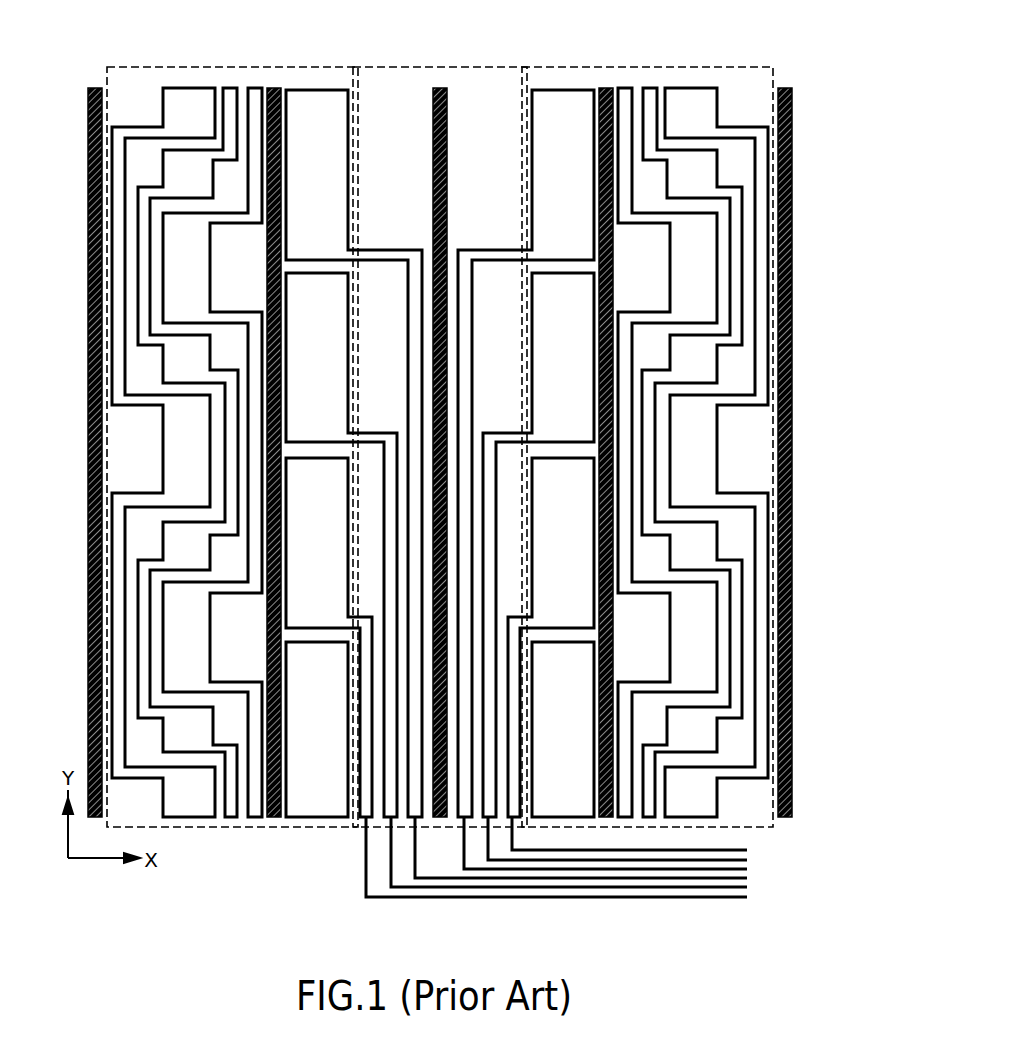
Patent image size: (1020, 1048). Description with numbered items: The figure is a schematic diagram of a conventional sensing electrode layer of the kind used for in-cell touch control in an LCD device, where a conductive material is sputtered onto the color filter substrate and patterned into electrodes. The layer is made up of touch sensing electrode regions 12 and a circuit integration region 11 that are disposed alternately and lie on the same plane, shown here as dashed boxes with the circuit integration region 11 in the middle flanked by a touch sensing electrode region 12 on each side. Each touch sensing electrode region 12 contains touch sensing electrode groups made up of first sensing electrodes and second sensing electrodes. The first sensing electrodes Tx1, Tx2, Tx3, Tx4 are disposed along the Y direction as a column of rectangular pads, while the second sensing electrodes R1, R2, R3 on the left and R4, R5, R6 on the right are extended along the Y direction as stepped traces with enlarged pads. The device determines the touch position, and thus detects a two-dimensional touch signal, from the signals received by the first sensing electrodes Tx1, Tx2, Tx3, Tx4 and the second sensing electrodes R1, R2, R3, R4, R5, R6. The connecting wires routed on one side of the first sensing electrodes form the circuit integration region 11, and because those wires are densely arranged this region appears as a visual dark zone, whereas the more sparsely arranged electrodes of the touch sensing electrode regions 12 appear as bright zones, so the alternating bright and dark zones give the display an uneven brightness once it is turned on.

The circuit integration region 11 is at (434, 67).
The touch sensing electrode region 12 is at (217, 67).
The second sensing electrode R1 is at (212, 452).
The second sensing electrode R2 is at (188, 452).
The second sensing electrode R3 is at (163, 452).
The second sensing electrode R4 is at (667, 452).
The second sensing electrode R5 is at (692, 452).
The second sensing electrode R6 is at (716, 452).
The first sensing electrode Tx1 is at (440, 729).
The first sensing electrode Tx2 is at (516, 677).
The first sensing electrode Tx3 is at (516, 580).
The first sensing electrode Tx4 is at (516, 484).